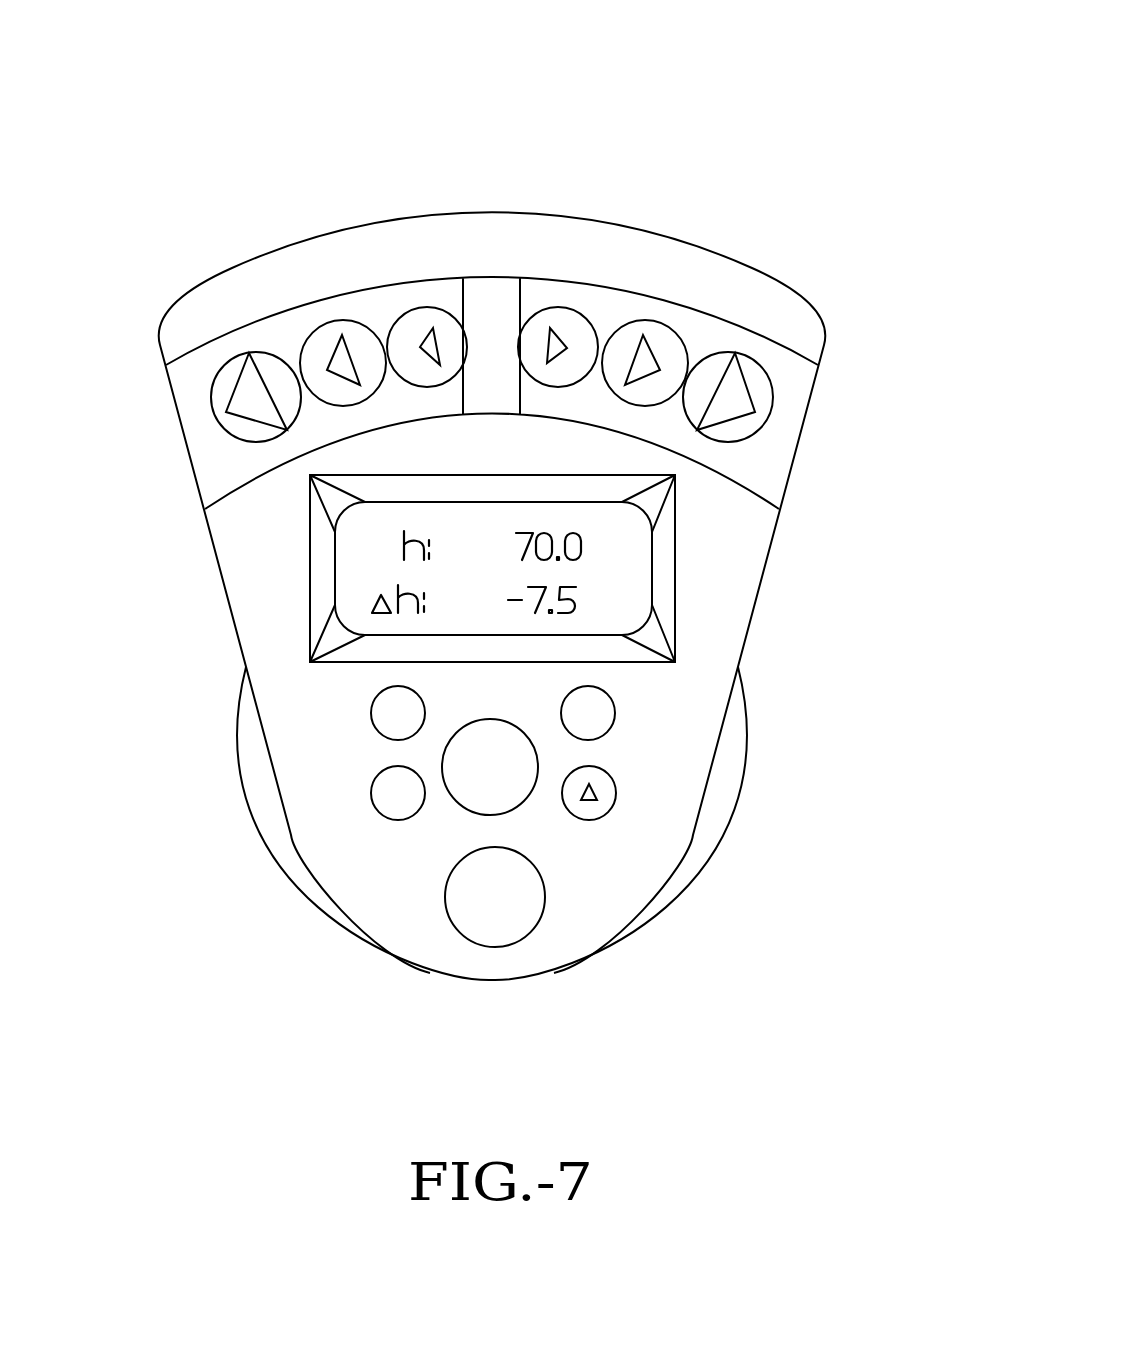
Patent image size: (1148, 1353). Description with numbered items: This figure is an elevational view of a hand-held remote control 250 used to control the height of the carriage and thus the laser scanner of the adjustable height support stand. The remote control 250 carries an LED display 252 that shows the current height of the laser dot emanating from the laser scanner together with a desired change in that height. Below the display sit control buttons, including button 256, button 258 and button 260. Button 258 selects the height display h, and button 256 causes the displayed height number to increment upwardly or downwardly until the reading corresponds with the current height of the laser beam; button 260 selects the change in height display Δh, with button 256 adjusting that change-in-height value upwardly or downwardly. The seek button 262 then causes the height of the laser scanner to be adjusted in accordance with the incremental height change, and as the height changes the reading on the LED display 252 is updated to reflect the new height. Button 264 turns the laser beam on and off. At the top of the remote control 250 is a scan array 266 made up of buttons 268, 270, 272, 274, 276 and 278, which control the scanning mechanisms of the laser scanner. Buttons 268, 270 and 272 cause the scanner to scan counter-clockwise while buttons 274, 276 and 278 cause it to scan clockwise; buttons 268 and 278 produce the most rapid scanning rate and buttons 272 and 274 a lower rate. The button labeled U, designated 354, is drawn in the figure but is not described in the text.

The remote control 250 is at (878, 240).
The LED display 252 is at (675, 558).
The control button 256 is at (615, 714).
The control button 258 is at (371, 796).
The control button 260 is at (613, 803).
The seek button 262 is at (518, 808).
The button 264 is at (457, 930).
The scan array 266 is at (835, 382).
The button 268 is at (249, 353).
The button 270 is at (336, 320).
The button 272 is at (437, 307).
The button 274 is at (560, 307).
The button 276 is at (658, 320).
The button 278 is at (737, 352).
The U button 354 is at (371, 713).